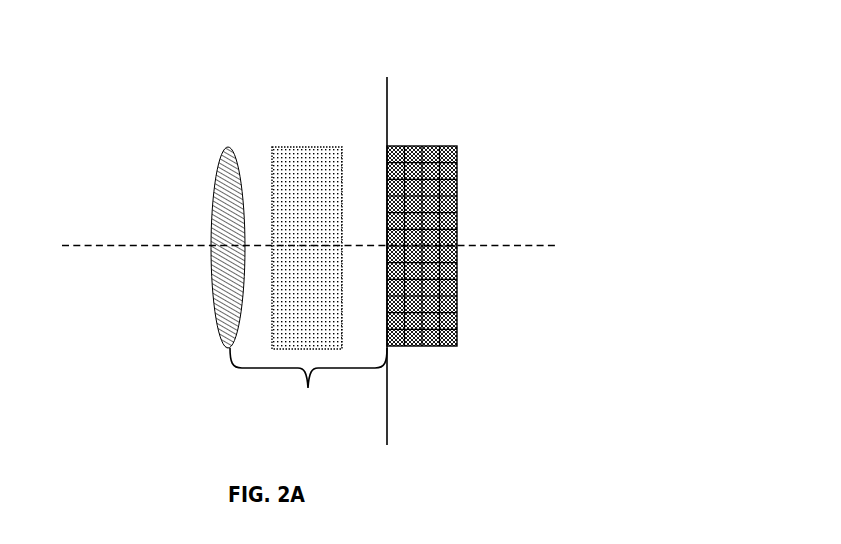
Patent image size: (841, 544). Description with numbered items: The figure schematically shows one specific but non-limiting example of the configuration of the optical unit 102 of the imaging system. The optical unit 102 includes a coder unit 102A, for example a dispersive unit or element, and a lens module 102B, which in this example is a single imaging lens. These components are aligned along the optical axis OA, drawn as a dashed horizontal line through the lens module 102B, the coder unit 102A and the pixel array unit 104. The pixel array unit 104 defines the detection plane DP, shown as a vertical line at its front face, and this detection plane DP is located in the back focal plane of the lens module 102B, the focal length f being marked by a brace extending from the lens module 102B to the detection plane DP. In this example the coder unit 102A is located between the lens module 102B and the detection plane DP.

The optical unit 102 is at (228, 189).
The coder unit 102A is at (310, 147).
The lens module 102B is at (212, 208).
The pixel array unit 104 is at (457, 146).
The optical axis OA is at (122, 246).
The detection plane DP is at (387, 403).
The focal length f is at (308, 384).